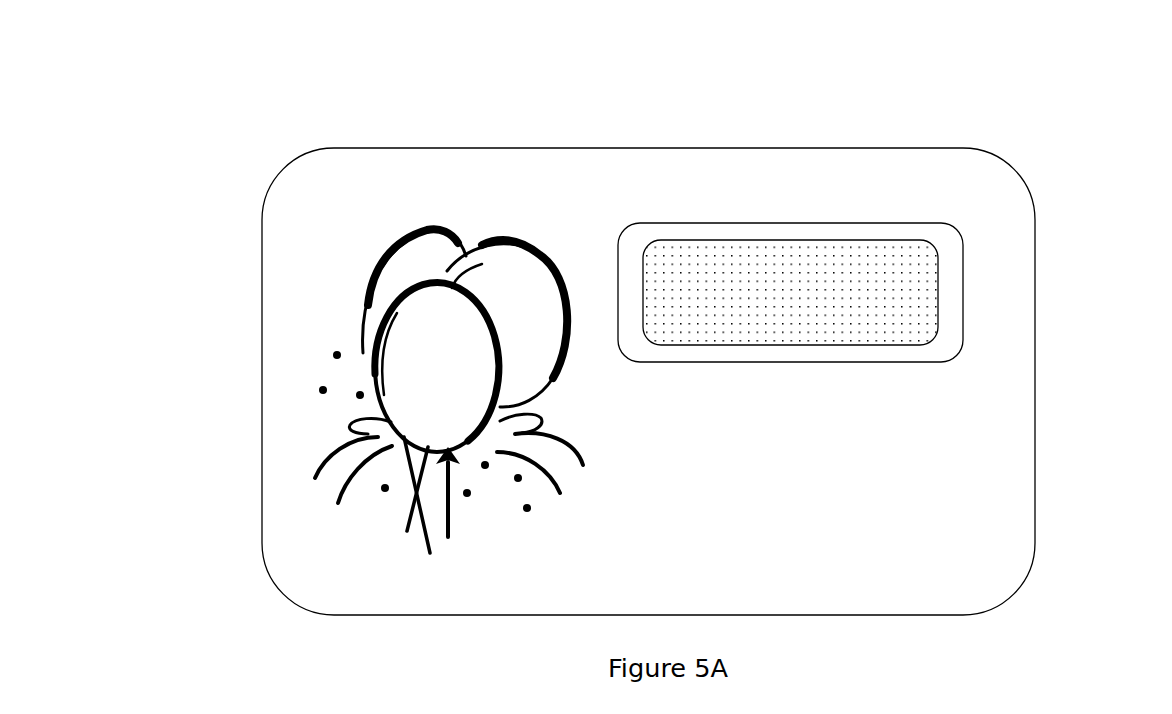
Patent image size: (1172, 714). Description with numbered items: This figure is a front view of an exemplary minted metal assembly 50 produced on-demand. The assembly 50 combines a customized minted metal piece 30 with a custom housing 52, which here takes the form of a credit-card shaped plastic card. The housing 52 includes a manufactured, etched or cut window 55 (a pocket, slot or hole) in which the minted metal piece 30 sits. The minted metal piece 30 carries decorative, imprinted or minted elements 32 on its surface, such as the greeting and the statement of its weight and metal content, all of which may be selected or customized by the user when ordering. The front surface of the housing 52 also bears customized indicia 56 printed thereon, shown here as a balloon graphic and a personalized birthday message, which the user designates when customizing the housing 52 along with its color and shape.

The minted metal assembly 50 is at (793, 103).
The housing 52 is at (452, 148).
The minted metal piece 30 is at (887, 240).
The imprinted or minted elements 32 is at (914, 265).
The window 55 is at (965, 308).
The customized indicia 56 is at (365, 240).